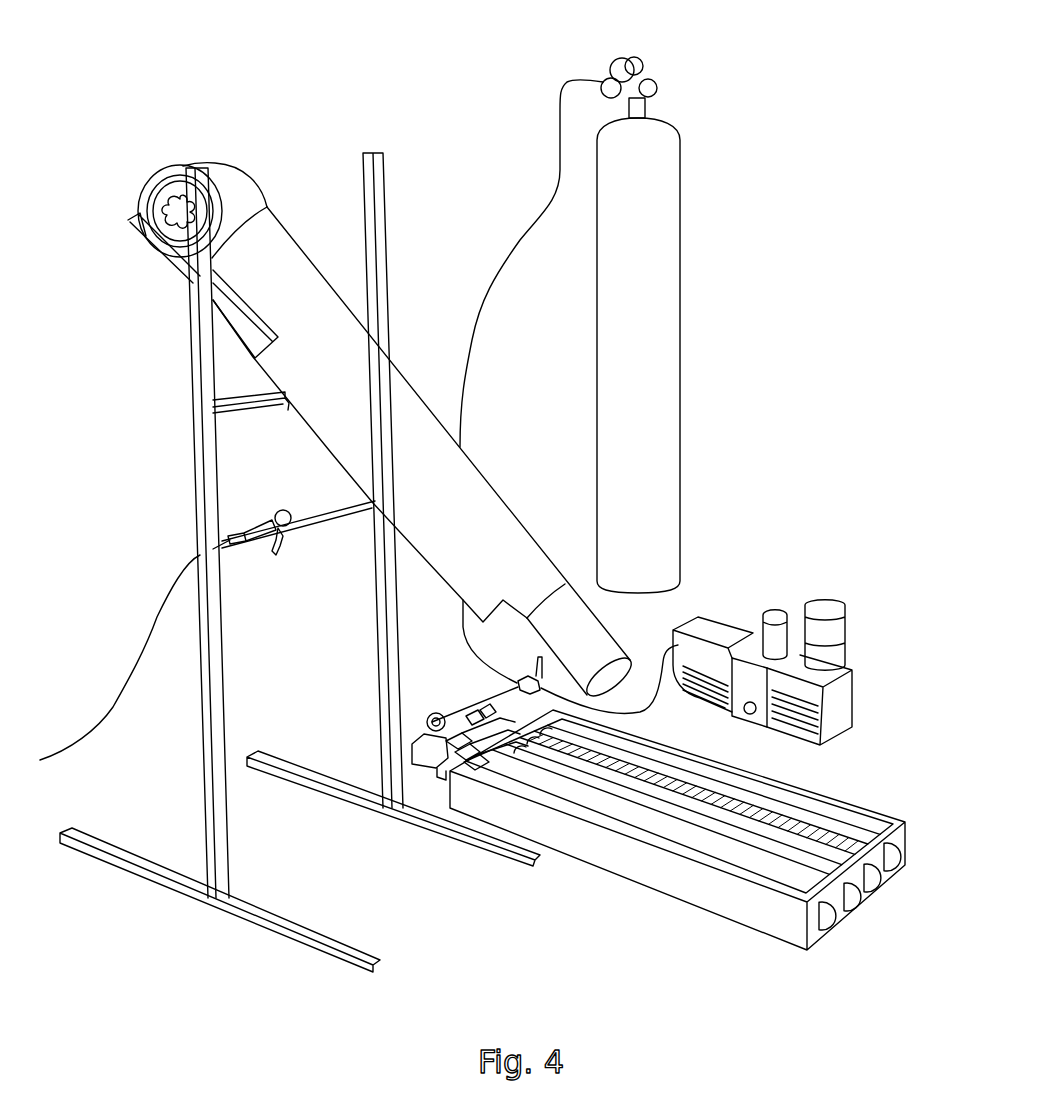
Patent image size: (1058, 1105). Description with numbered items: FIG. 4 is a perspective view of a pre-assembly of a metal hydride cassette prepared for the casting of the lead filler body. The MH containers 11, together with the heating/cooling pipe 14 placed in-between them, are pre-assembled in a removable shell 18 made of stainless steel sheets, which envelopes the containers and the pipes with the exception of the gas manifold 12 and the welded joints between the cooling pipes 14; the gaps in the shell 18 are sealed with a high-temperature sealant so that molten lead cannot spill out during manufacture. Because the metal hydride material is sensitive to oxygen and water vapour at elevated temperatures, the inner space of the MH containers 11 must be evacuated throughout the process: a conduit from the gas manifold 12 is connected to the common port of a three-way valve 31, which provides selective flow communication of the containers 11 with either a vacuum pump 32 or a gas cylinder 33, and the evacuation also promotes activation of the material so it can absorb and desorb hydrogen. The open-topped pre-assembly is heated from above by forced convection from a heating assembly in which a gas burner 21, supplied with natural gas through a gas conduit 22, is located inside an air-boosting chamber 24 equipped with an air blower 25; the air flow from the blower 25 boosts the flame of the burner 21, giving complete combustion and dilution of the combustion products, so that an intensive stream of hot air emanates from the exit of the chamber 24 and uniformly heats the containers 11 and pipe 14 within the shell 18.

The MH containers 11 is at (677, 846).
The gas manifold 12 is at (410, 752).
The heating/cooling pipe 14 is at (842, 845).
The removable shell 18 is at (842, 800).
The gas burner 21 is at (330, 525).
The gas conduit 22 is at (130, 673).
The air-boosting chamber 24 is at (507, 527).
The air blower 25 is at (233, 185).
The 3-way valve 31 is at (513, 683).
The vacuum pump 32 is at (825, 607).
The gas cylinder 33 is at (657, 187).